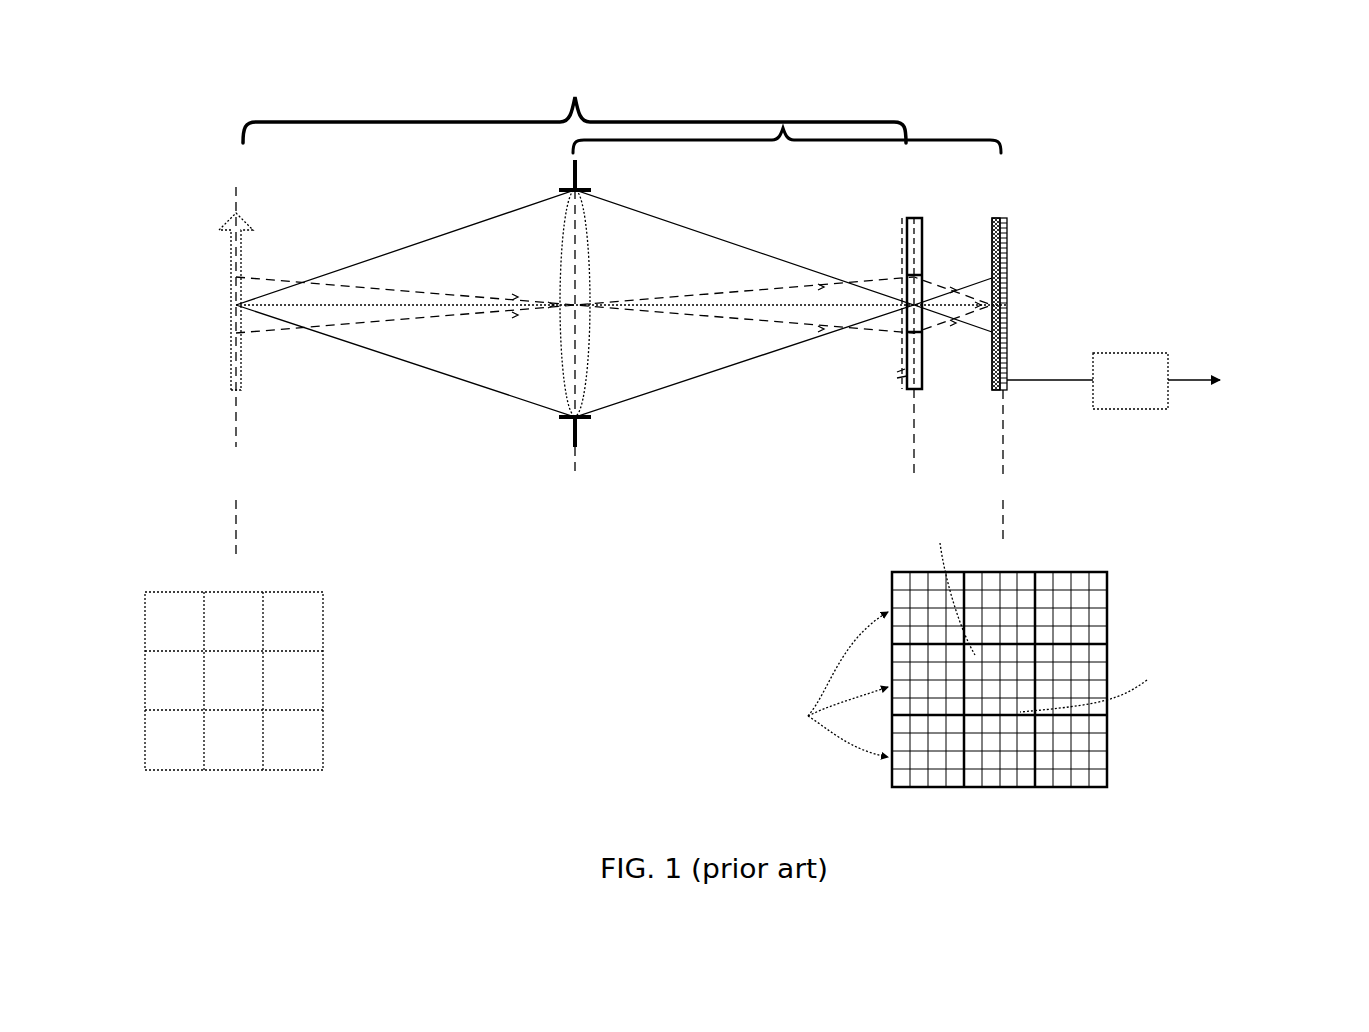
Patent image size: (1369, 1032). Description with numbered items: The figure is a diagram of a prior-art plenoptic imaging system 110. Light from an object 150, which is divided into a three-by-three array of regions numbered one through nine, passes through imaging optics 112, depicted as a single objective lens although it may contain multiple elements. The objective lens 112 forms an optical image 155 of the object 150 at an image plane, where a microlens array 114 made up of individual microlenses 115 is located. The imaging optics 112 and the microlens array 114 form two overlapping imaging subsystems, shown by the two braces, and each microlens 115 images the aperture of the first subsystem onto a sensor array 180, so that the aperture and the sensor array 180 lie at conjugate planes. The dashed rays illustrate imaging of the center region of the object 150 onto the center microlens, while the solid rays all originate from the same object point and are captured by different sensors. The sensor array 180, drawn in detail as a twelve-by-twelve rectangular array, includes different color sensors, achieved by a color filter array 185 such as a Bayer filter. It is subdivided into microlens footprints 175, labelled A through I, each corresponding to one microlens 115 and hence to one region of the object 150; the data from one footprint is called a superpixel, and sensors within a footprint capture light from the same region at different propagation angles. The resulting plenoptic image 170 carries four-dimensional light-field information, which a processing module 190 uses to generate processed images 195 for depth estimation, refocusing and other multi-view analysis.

The plenoptic imaging system 110 is at (163, 108).
The object 150 is at (247, 243).
The imaging optics 112 is at (566, 238).
The microlens 115 is at (900, 257).
The microlens array 114 is at (897, 214).
The optical image 155 is at (900, 362).
The plenoptic image 170 is at (993, 278).
The sensor array 180 is at (1010, 245).
The microlens footprint 175 is at (827, 684).
The color filter array 185 is at (990, 378).
The processing module 190 is at (1130, 381).
The processed images 195 is at (1254, 381).